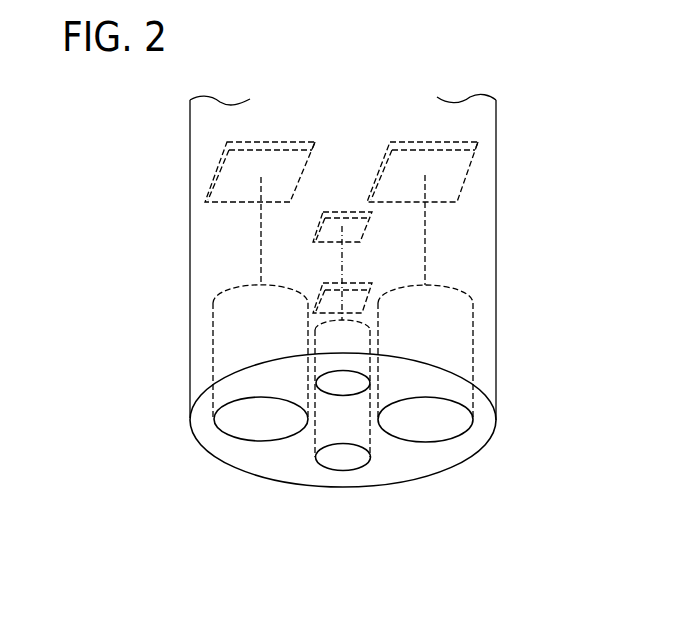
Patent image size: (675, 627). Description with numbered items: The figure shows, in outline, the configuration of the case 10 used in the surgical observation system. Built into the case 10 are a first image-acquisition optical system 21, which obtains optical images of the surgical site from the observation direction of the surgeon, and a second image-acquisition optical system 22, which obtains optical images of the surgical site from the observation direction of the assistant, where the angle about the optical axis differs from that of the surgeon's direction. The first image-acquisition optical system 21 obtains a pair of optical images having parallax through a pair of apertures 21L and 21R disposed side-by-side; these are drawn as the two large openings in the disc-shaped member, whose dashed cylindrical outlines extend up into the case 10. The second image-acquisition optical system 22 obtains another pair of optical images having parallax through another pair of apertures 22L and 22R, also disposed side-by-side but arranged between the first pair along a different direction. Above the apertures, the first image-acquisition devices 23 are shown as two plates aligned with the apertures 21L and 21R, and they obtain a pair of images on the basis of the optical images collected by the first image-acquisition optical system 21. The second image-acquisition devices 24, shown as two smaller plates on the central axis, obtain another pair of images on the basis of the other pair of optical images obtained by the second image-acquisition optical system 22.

The case 10 is at (513, 214).
The first image-acquisition optical system 21 is at (497, 312).
The aperture 21L is at (252, 428).
The aperture 21R is at (433, 428).
The second image-acquisition optical system 22 is at (379, 489).
The aperture 22R is at (368, 386).
The aperture 22L is at (345, 462).
The first image-acquisition devices 23 is at (232, 173).
The second image-acquisition devices 24 is at (342, 212).